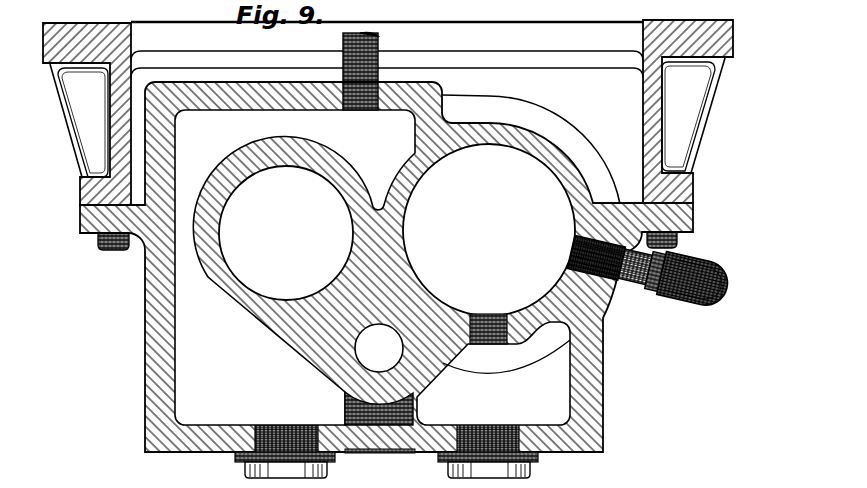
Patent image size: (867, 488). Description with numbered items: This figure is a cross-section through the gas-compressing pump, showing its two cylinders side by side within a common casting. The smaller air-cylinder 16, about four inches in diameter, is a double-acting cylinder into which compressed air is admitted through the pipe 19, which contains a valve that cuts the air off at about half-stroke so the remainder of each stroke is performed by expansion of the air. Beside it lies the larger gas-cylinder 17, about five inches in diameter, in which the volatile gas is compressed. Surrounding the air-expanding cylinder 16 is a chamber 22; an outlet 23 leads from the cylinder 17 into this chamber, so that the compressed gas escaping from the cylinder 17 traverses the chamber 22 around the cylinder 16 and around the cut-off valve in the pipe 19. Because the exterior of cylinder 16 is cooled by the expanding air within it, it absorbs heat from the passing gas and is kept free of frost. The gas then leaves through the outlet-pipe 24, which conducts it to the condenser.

The air-cylinder 16 is at (286, 233).
The gas-cylinder 17 is at (489, 230).
The pipe 19 is at (380, 433).
The chamber 22 is at (295, 267).
The outlet 23 is at (488, 339).
The outlet-pipe 24 is at (378, 36).